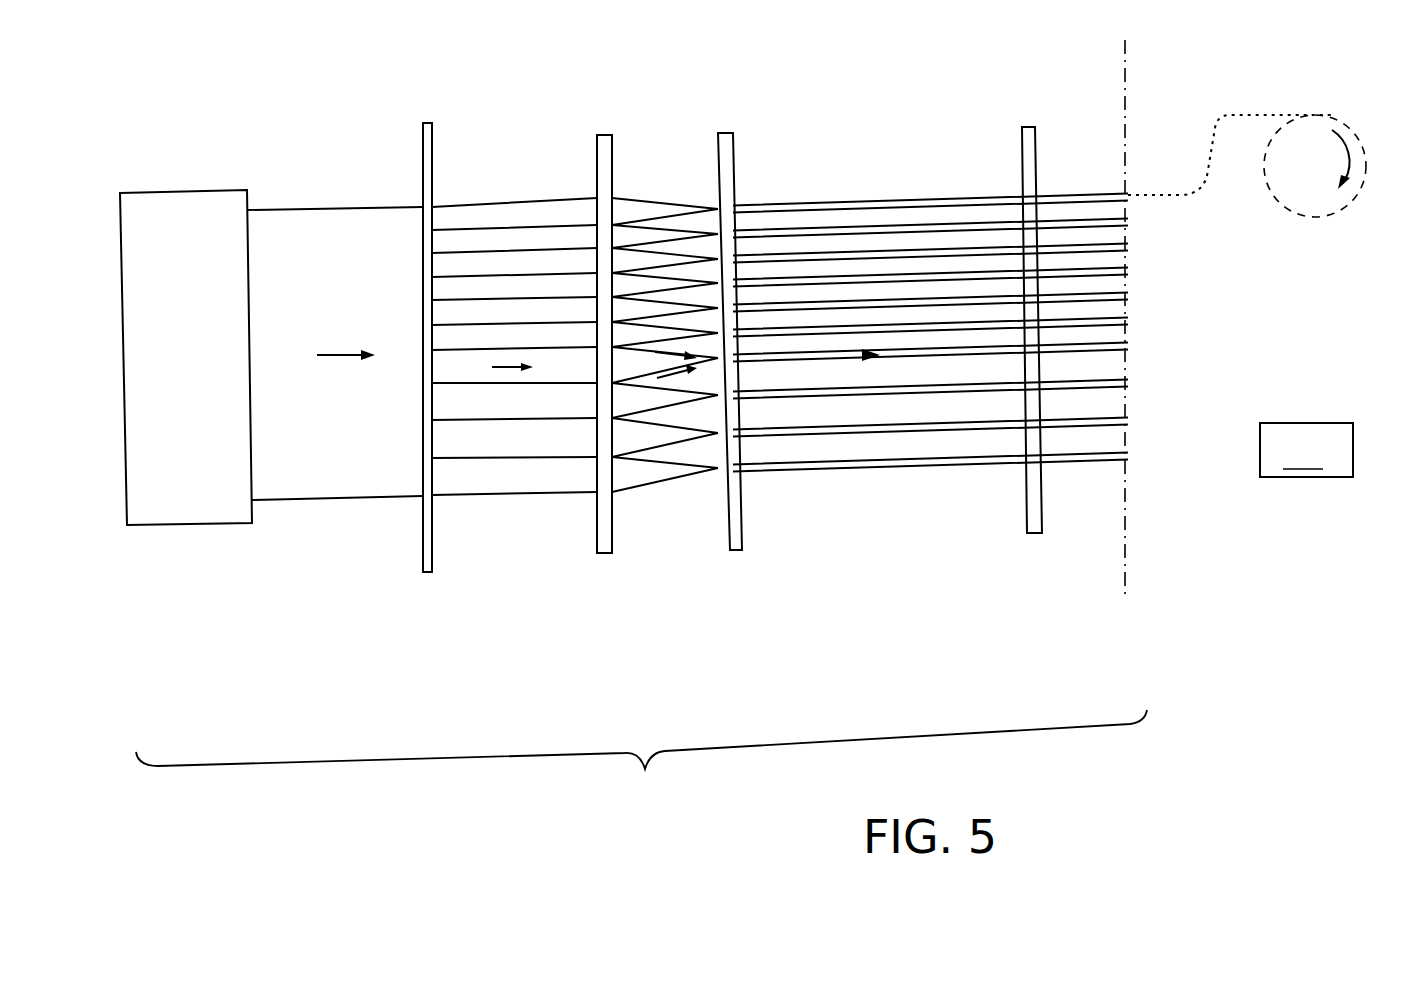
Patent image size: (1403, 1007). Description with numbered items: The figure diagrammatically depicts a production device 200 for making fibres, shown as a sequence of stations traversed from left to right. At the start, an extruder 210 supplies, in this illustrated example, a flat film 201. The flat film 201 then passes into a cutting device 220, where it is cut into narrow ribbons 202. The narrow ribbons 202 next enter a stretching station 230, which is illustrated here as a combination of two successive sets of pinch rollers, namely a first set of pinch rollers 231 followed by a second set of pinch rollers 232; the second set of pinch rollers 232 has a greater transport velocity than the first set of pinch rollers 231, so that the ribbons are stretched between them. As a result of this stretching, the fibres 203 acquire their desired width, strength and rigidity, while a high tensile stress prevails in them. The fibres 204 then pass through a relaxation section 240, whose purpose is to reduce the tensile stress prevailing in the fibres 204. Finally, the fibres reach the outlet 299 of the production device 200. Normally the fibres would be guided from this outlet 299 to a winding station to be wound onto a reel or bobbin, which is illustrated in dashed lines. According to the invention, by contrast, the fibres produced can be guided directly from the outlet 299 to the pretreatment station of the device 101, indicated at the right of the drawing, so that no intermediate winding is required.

The device 101 is at (1233, 455).
The production device 200 is at (641, 760).
The flat film 201 is at (326, 230).
The narrow ribbons 202 is at (530, 240).
The fibres 203 is at (658, 235).
The fibres 204 is at (858, 230).
The extruder 210 is at (181, 523).
The cutting device 220 is at (437, 573).
The stretching station 230 is at (675, 402).
The first set of pinch rollers 231 is at (611, 556).
The second set of pinch rollers 232 is at (733, 370).
The relaxation section 240 is at (895, 555).
The outlet 299 is at (1132, 590).